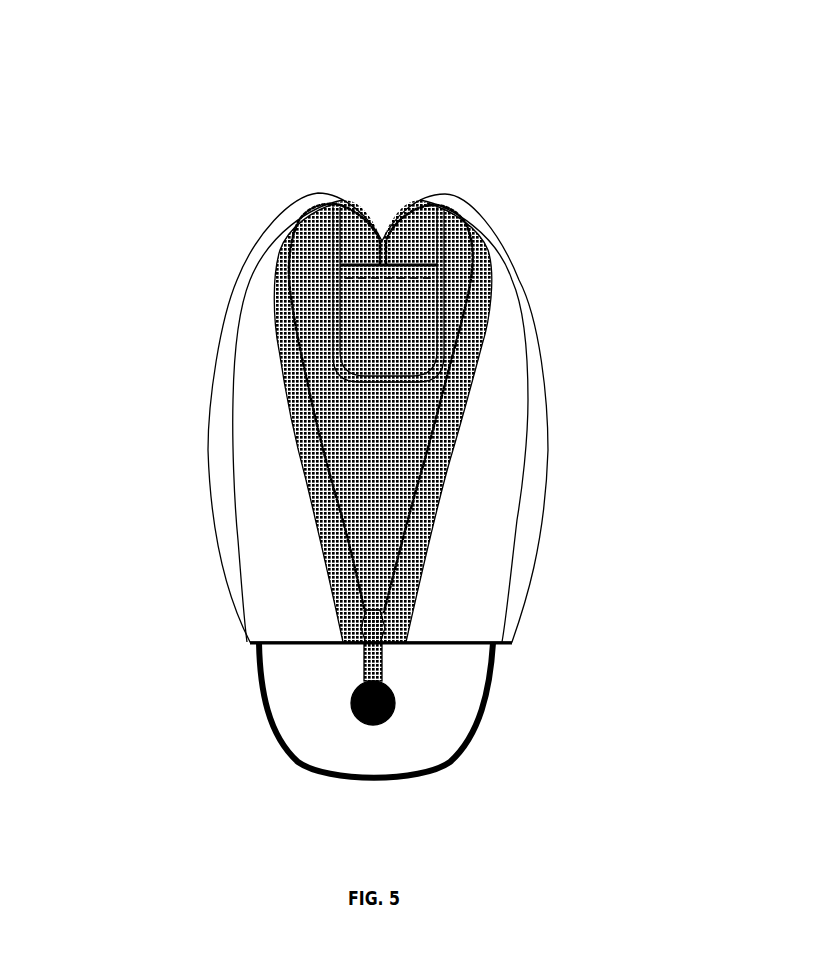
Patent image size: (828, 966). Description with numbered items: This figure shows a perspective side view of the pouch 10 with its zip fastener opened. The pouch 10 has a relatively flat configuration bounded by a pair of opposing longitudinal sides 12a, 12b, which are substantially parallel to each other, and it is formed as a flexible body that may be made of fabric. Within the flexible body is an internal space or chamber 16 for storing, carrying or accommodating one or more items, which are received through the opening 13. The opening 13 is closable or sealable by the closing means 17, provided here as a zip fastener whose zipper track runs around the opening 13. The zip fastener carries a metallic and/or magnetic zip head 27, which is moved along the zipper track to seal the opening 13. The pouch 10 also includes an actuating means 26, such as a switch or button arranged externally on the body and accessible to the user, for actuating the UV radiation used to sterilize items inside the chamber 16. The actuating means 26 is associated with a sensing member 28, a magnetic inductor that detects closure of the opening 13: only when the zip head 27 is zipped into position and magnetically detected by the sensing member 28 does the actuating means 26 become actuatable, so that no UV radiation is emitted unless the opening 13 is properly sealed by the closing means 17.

The pouch 10 is at (168, 168).
The longitudinal side 12a is at (528, 528).
The longitudinal side 12b is at (208, 462).
The opening 13 is at (308, 250).
The internal space or chamber 16 is at (395, 440).
The closing means 17 is at (455, 355).
The actuating means 26 is at (390, 338).
The zip head 27 is at (390, 723).
The sensing member 28 is at (397, 298).